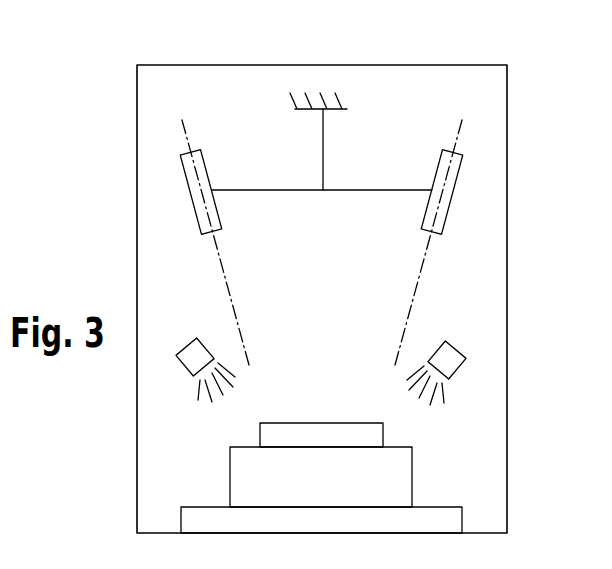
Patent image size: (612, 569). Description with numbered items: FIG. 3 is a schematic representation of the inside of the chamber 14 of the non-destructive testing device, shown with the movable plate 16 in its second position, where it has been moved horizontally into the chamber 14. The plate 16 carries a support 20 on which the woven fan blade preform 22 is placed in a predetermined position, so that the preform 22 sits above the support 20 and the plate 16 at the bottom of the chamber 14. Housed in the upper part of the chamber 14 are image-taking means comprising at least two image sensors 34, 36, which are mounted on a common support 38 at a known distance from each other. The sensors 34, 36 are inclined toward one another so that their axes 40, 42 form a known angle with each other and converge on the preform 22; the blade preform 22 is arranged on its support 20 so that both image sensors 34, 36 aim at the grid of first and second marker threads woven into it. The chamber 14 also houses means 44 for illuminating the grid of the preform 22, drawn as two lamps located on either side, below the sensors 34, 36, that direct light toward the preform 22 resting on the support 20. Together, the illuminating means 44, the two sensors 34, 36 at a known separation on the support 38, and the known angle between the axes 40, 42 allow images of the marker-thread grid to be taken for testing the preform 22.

The chamber 14 is at (341, 65).
The plate 16 is at (181, 520).
The support 20 is at (412, 489).
The blade preform 22 is at (383, 434).
The image sensor 34 is at (452, 195).
The image sensor 36 is at (207, 172).
The support 38 is at (323, 138).
The axis 40 is at (233, 307).
The axis 42 is at (414, 291).
The illuminating means 44 is at (190, 350).